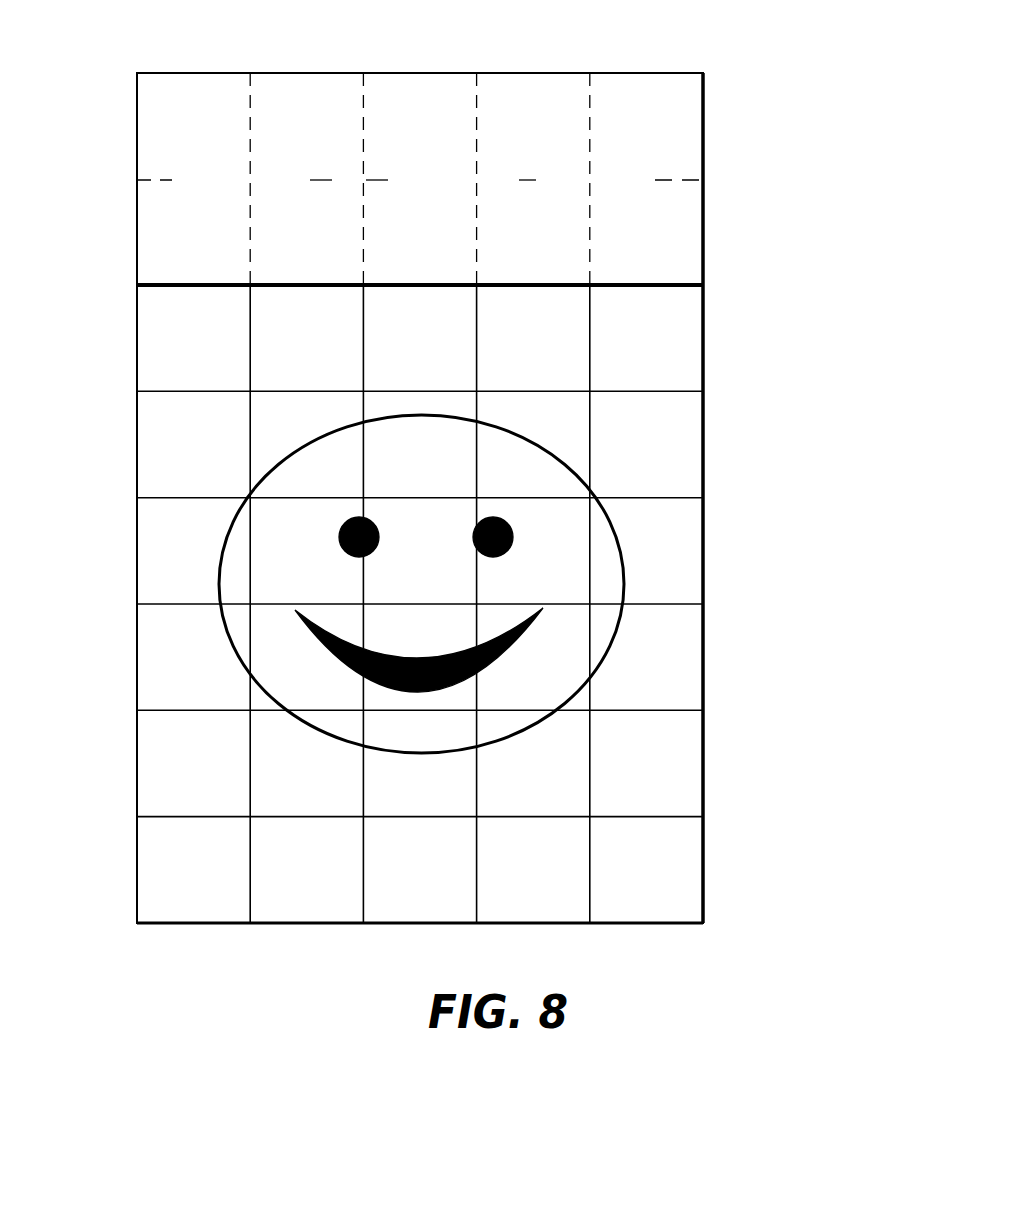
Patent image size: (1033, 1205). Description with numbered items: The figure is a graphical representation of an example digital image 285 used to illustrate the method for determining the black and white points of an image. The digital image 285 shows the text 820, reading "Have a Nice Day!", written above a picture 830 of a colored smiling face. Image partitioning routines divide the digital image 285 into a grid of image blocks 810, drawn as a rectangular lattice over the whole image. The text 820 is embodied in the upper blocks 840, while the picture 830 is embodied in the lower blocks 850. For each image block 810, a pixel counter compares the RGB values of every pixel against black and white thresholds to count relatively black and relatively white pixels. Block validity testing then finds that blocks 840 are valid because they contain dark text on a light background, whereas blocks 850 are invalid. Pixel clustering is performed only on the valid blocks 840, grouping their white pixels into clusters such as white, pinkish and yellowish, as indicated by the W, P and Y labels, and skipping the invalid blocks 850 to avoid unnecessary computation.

The digital image 285 is at (795, 77).
The image blocks 810 is at (690, 558).
The text 820 is at (177, 168).
The picture 830 is at (603, 663).
The valid blocks 840 is at (137, 181).
The invalid blocks 850 is at (137, 527).